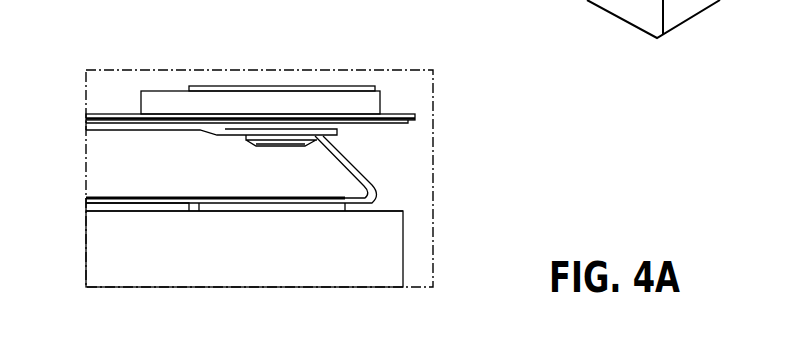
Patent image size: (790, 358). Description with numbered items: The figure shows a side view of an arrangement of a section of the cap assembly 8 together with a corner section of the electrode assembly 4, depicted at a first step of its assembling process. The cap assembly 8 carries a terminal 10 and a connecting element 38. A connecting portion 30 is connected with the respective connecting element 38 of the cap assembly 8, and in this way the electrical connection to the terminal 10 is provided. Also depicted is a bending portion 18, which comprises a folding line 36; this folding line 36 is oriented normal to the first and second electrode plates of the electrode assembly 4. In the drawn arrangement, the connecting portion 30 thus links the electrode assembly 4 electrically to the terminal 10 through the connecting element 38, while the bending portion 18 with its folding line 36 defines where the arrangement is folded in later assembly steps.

The electrode assembly 4 is at (70, 257).
The cap assembly 8 is at (114, 114).
The terminal 10 is at (322, 86).
The bending portion 18 is at (349, 163).
The connecting portion 30 is at (276, 148).
The folding line 36 is at (378, 198).
The connecting element 38 is at (273, 135).